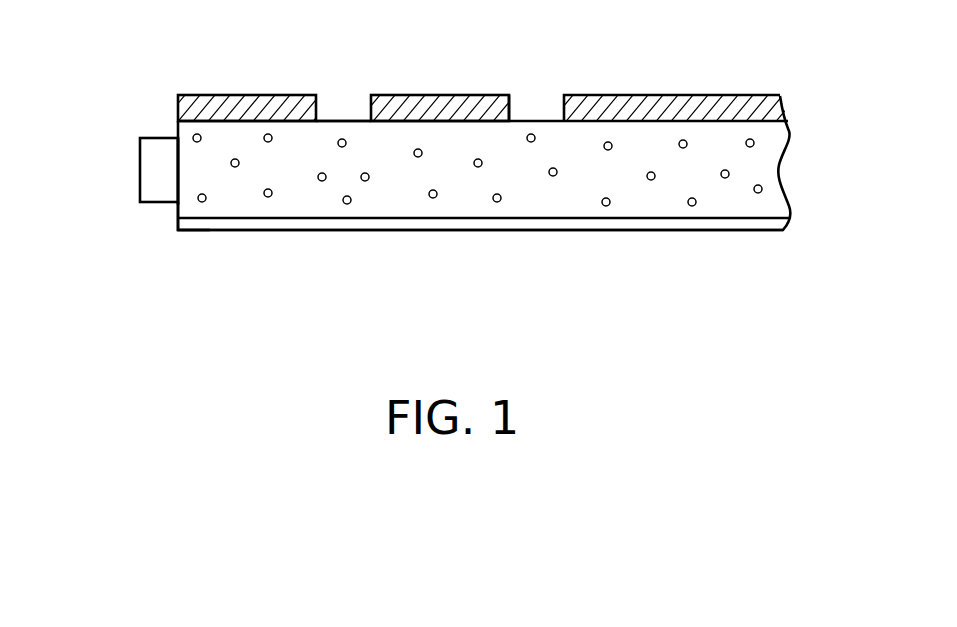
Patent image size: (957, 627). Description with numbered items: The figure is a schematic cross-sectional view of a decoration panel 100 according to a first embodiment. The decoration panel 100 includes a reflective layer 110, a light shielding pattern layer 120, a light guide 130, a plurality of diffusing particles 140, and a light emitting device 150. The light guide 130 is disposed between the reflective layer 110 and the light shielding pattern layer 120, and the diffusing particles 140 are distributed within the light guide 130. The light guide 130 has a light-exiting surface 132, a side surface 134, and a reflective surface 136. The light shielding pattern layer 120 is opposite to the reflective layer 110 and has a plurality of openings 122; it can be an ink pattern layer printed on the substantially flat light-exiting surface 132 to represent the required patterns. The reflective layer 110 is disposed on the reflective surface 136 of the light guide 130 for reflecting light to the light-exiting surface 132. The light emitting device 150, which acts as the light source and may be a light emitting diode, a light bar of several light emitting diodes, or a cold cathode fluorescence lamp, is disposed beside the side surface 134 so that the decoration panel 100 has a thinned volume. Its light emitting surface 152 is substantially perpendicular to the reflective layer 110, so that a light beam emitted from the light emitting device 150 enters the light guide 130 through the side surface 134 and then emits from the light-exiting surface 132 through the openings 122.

The decoration panel 100 is at (837, 310).
The reflective layer 110 is at (313, 232).
The light shielding pattern layer 120 is at (247, 94).
The openings 122 is at (522, 115).
The light guide 130 is at (465, 203).
The light-exiting surface 132 is at (343, 118).
The side surface 134 is at (165, 202).
The reflective surface 136 is at (632, 222).
The diffusing particles 140 is at (553, 177).
The light emitting device 150 is at (158, 172).
The light emitting surface 152 is at (192, 167).